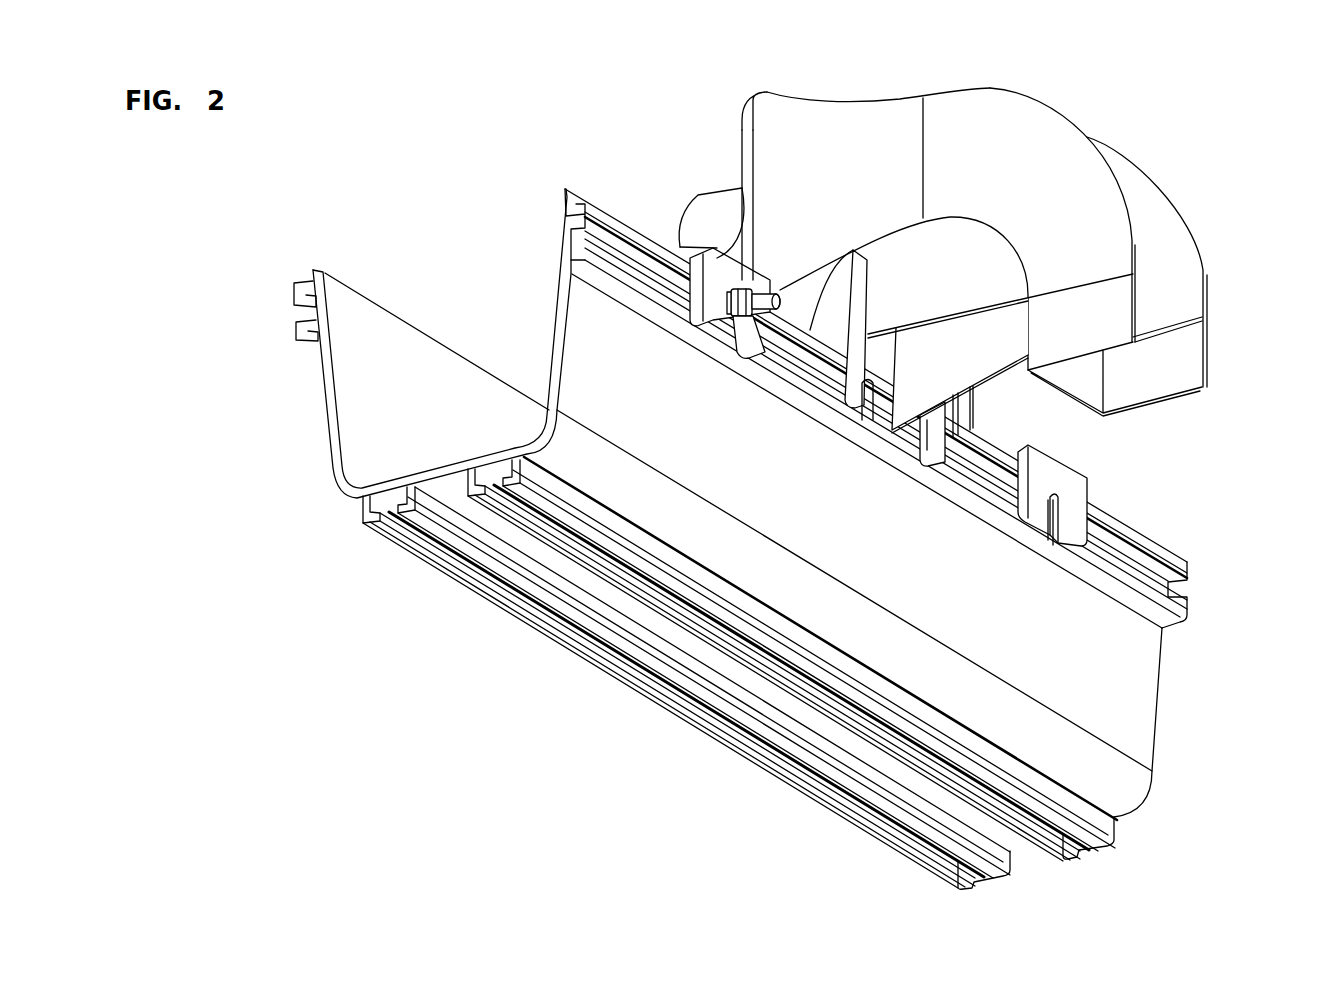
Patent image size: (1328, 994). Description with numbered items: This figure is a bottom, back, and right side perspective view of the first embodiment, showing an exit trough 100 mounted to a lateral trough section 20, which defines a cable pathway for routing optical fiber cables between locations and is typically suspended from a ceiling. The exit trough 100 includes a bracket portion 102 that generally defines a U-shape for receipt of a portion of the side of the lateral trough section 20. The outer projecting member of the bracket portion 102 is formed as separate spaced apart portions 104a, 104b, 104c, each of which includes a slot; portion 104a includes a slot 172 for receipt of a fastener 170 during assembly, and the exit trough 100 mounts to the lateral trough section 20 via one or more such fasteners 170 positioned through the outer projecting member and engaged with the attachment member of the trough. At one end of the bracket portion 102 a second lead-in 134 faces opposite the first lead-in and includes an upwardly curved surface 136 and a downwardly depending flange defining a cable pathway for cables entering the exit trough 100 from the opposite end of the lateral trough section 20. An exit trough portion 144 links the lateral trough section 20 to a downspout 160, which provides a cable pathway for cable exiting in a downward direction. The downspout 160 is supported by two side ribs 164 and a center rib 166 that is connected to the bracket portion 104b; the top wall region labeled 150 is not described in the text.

The lateral trough section 20 is at (544, 647).
The exit trough 100 is at (1050, 98).
The bracket portion 102 is at (718, 303).
The portion of outer projecting member 104a is at (752, 353).
The portion of outer projecting member 104b is at (931, 470).
The portion of outer projecting member 104c is at (1065, 542).
The second lead-in 134 is at (710, 192).
The upwardly curved surface 136 is at (705, 230).
The exit trough portion 144 is at (763, 92).
The top wall 150 is at (817, 98).
The downspout 160 is at (1207, 268).
The side rib 164 is at (960, 281).
The center rib 166 is at (960, 376).
The fastener 170 is at (758, 318).
The slot 172 is at (733, 352).